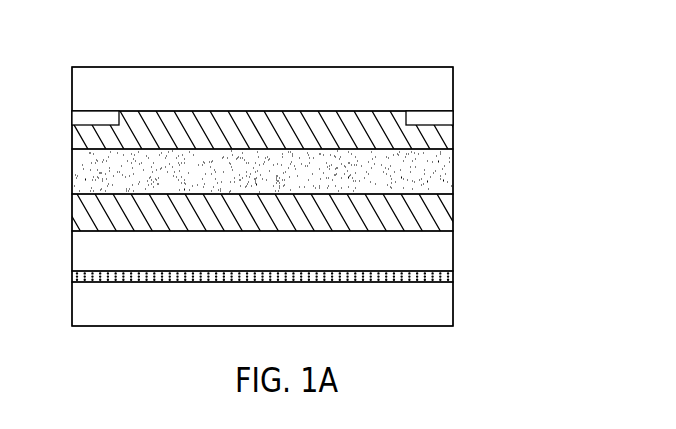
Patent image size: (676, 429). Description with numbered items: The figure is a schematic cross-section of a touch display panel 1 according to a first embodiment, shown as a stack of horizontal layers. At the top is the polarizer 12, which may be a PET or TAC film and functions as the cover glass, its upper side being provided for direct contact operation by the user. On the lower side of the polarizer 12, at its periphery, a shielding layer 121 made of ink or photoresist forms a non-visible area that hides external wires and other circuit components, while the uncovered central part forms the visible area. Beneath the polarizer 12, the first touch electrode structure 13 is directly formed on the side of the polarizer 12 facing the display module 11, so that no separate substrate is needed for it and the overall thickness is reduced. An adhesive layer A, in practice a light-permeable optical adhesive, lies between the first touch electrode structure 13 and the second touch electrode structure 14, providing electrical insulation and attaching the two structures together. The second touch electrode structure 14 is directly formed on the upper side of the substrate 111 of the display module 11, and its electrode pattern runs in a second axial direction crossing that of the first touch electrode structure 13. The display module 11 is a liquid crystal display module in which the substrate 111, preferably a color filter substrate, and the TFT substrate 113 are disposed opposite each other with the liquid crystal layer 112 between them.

The touch display panel 1 is at (113, 40).
The display module 11 is at (312, 278).
The substrate 111 is at (437, 251).
The liquid crystal layer 112 is at (450, 273).
The TFT substrate 113 is at (437, 306).
The polarizer 12 is at (437, 93).
The shielding layer 121 is at (440, 118).
The first touch electrode structure 13 is at (445, 141).
The adhesive layer A is at (445, 174).
The second touch electrode structure 14 is at (445, 213).